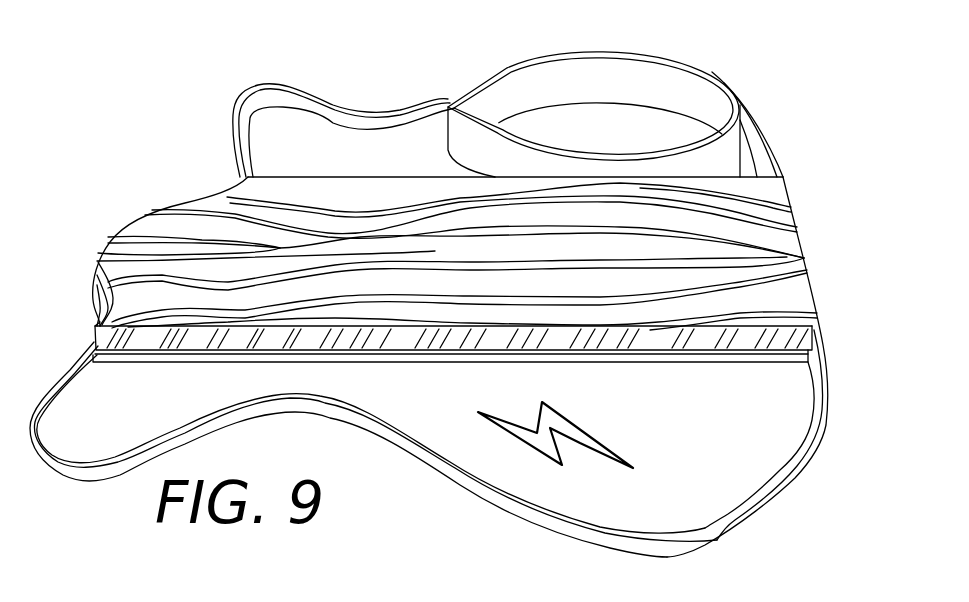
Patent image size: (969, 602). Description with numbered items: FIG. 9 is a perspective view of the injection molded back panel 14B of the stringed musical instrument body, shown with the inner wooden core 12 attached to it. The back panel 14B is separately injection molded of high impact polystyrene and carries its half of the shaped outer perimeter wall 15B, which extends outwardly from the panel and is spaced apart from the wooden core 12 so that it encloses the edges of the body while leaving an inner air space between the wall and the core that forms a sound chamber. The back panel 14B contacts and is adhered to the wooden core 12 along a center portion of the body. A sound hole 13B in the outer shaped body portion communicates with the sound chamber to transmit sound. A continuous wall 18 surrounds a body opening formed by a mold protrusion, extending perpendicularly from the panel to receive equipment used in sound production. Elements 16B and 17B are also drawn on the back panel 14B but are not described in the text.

The wooden core 12 is at (202, 210).
The sound hole 13B is at (580, 443).
The back panel 14B is at (311, 95).
The outer perimeter wall 15B is at (383, 114).
The lower strap loop 16B is at (668, 478).
The hatched layer 17B is at (685, 357).
The continuous wall 18 is at (727, 150).